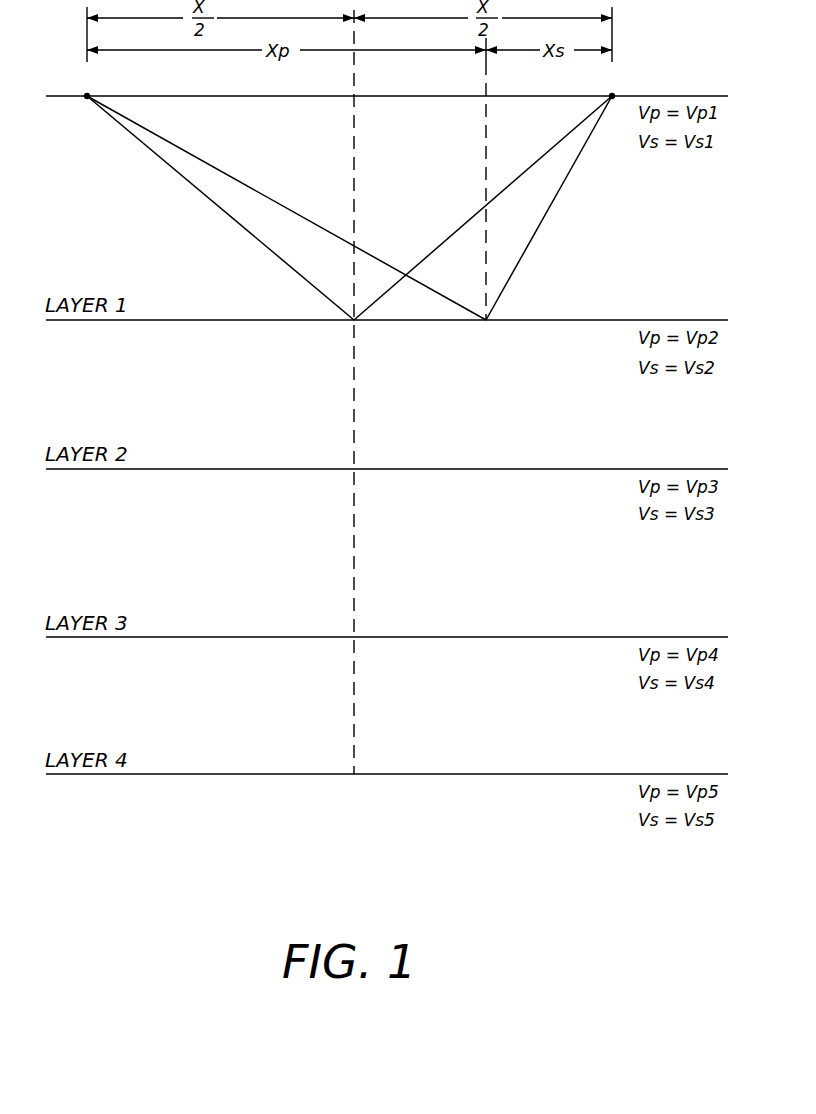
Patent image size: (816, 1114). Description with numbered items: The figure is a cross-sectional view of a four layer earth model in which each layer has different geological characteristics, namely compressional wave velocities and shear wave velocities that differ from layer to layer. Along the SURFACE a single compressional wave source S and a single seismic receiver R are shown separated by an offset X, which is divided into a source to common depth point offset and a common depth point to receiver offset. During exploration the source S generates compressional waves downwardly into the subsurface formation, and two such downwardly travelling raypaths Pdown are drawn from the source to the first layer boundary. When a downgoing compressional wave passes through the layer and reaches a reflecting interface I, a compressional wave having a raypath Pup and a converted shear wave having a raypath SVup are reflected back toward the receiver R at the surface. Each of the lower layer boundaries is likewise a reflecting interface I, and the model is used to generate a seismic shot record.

The surface SURFACE is at (680, 96).
The compressional wave source S is at (87, 96).
The seismic receiver R is at (612, 96).
The downwardly travelling compressional wave raypath Pdown is at (240, 182).
The reflected compressional wave raypath Pup is at (442, 244).
The converted shear wave raypath SVup is at (538, 228).
The reflecting interface I is at (663, 320).